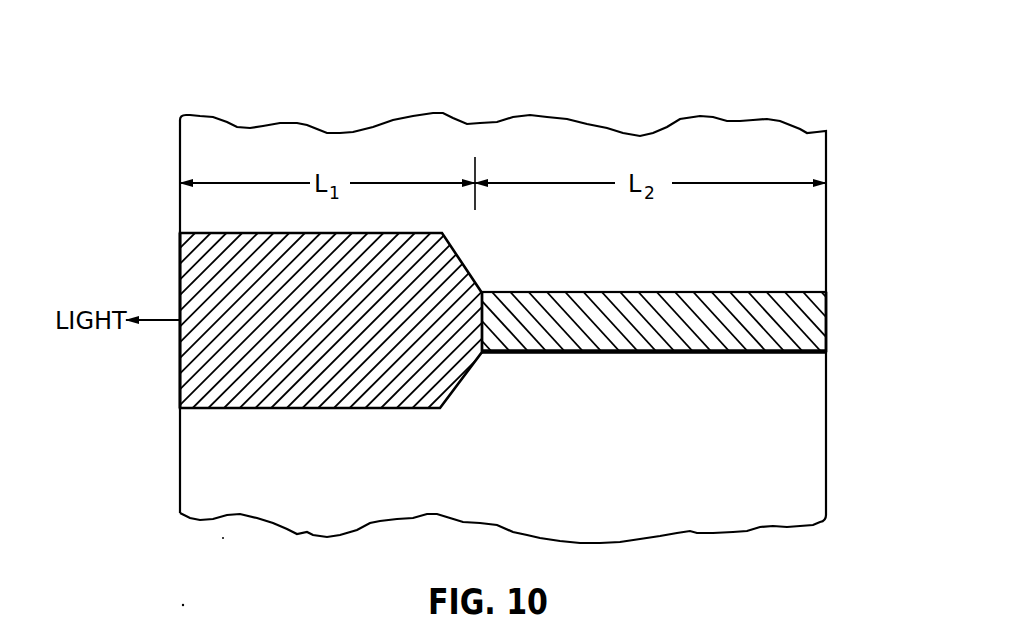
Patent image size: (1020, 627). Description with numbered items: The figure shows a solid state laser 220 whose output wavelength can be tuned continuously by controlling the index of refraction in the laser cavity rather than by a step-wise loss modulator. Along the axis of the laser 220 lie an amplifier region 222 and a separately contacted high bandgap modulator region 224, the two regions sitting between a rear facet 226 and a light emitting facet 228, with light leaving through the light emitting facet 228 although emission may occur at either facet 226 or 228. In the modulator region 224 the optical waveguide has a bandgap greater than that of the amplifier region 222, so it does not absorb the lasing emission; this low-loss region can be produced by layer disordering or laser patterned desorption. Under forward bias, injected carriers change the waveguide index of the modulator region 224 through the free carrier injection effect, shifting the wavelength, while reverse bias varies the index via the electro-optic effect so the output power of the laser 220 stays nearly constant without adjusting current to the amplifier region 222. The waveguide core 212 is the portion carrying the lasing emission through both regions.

The laser 220 is at (573, 92).
The amplifier region 222 is at (482, 418).
The high bandgap modulator region 224 is at (826, 437).
The waveguide core 212 is at (637, 287).
The light emitting facet 228 is at (180, 268).
The rear facet 226 is at (828, 320).